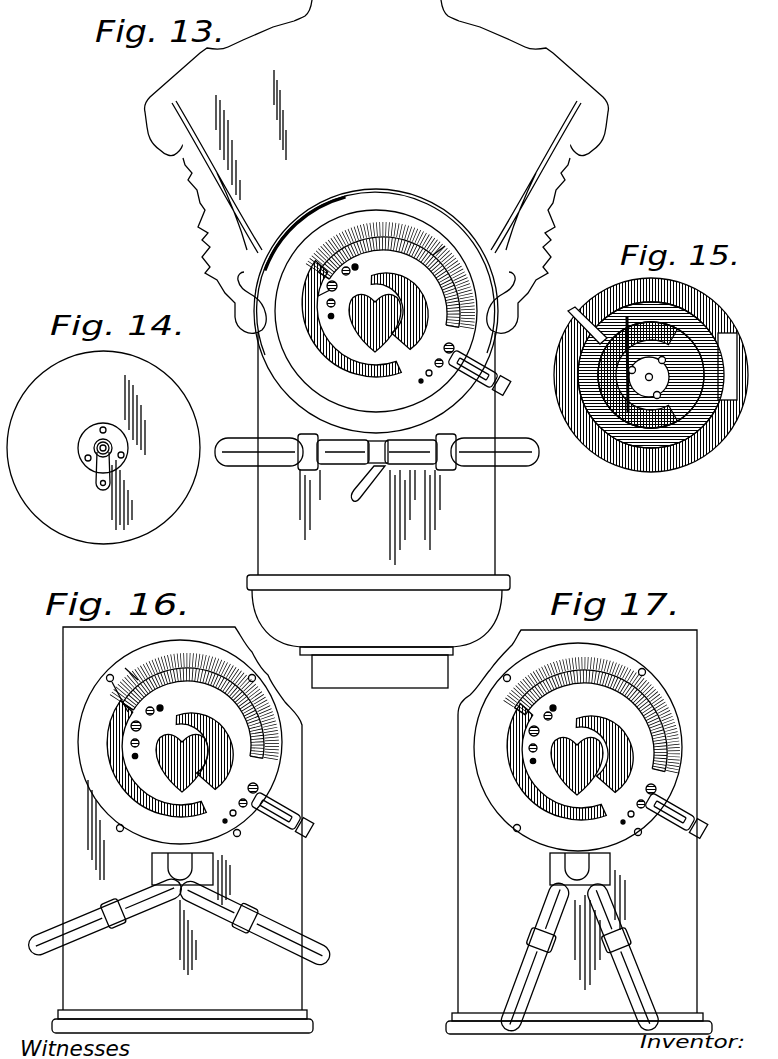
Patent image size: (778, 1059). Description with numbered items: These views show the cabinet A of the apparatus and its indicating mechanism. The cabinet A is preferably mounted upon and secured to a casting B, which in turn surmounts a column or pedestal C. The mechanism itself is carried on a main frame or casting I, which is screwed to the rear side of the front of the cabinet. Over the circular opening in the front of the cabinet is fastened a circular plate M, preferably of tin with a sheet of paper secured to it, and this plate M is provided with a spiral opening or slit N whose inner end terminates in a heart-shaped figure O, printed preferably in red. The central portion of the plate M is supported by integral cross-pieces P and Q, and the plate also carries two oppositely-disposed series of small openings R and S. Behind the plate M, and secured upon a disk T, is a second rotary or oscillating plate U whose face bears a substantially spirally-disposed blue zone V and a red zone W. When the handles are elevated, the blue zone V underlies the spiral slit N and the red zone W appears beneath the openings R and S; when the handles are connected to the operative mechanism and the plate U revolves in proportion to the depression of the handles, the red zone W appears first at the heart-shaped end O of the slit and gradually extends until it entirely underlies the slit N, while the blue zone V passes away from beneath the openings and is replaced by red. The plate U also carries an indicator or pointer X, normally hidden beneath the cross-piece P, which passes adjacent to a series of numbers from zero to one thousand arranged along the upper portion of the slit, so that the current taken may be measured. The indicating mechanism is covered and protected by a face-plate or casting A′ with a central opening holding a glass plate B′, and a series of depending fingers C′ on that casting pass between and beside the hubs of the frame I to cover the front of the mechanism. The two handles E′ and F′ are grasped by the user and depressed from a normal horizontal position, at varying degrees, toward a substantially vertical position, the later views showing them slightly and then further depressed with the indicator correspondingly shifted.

In FIG. 13, the cabinet A is at (377, 287).
In FIG. 13, the face-plate or casting A′ is at (305, 223).
In FIG. 13, the casting B is at (378, 615).
In FIG. 13, the glass plate B′ is at (340, 199).
In FIG. 13, the column or pedestal C is at (392, 676).
In FIG. 13, the depending fingers C′ is at (369, 475).
In FIG. 13, the handle E′ is at (243, 462).
In FIG. 16, the handle E′ is at (43, 940).
In FIG. 17, the handle E′ is at (523, 978).
In FIG. 13, the handle F′ is at (525, 468).
In FIG. 16, the handle F′ is at (305, 940).
In FIG. 17, the handle F′ is at (643, 988).
In FIG. 16, the main frame or casting I is at (200, 865).
In FIG. 17, the main frame or casting I is at (603, 867).
In FIG. 13, the circular plate M is at (282, 358).
In FIG. 16, the circular plate M is at (87, 762).
In FIG. 17, the circular plate M is at (670, 717).
In FIG. 13, the spiral opening or slit N is at (412, 243).
In FIG. 16, the spiral opening or slit N is at (115, 770).
In FIG. 17, the spiral opening or slit N is at (670, 743).
In FIG. 13, the heart-shaped figure O is at (383, 327).
In FIG. 16, the heart-shaped figure O is at (167, 750).
In FIG. 17, the heart-shaped figure O is at (579, 733).
In FIG. 13, the cross-piece P is at (330, 275).
In FIG. 16, the cross-piece P is at (127, 710).
In FIG. 17, the cross-piece P is at (520, 670).
In FIG. 16, the cross-piece Q is at (295, 835).
In FIG. 17, the cross-piece Q is at (600, 797).
In FIG. 13, the series of small openings R is at (358, 268).
In FIG. 16, the series of small openings R is at (163, 707).
In FIG. 17, the series of small openings R is at (537, 760).
In FIG. 13, the series of small openings S is at (420, 383).
In FIG. 16, the series of small openings S is at (227, 823).
In FIG. 17, the series of small openings S is at (660, 787).
In FIG. 14, the disk T is at (145, 455).
In FIG. 14, the rotary or oscillating plate U is at (47, 362).
In FIG. 15, the rotary or oscillating plate U is at (651, 380).
In FIG. 13, the blue zone V is at (436, 258).
In FIG. 15, the blue zone V is at (650, 420).
In FIG. 16, the blue zone V is at (130, 673).
In FIG. 15, the red zone W is at (670, 460).
In FIG. 16, the red zone W is at (127, 797).
In FIG. 17, the red zone W is at (653, 697).
In FIG. 13, the indicator or pointer X is at (322, 300).
In FIG. 15, the indicator or pointer X is at (572, 312).
In FIG. 16, the indicator or pointer X is at (132, 697).